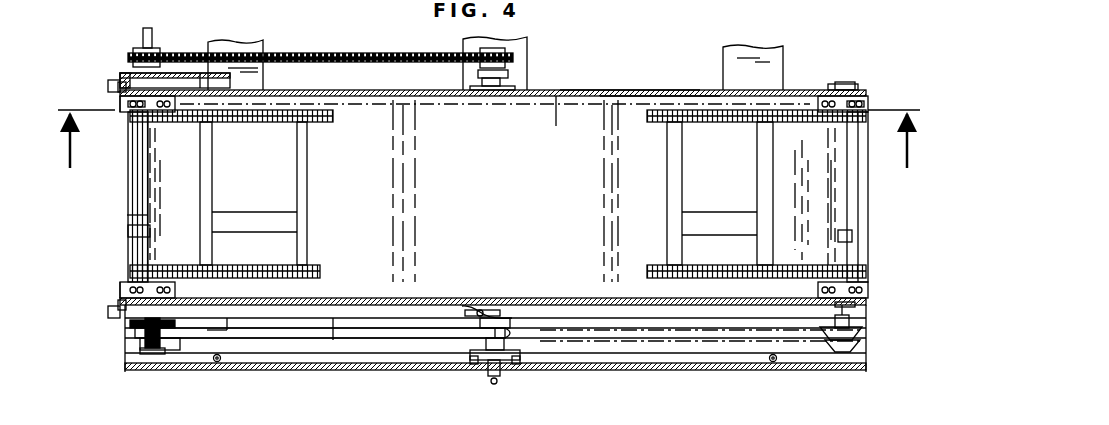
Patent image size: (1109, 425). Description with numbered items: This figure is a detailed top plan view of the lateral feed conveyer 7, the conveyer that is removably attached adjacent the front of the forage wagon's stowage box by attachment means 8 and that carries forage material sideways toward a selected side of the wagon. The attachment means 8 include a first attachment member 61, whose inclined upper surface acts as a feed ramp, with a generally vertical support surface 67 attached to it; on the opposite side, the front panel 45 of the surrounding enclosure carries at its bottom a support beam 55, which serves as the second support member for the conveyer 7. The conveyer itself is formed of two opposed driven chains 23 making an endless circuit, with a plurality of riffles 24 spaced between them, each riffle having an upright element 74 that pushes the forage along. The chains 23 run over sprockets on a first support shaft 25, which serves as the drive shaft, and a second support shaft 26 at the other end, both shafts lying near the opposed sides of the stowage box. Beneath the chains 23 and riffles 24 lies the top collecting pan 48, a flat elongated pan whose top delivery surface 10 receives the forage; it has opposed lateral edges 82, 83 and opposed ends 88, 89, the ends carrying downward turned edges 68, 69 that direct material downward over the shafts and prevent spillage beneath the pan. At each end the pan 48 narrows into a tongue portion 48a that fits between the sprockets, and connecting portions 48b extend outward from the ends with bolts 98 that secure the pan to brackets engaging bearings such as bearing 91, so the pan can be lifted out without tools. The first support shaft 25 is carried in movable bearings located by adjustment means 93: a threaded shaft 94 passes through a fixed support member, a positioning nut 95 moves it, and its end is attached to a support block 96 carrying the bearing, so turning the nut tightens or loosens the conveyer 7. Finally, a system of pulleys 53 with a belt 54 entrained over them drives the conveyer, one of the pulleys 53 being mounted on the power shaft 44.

The lateral feed conveyer 7 is at (62, 265).
The attachment means 8 is at (786, 65).
The top delivery surface 10 is at (556, 122).
The driven chains 23 is at (312, 122).
The riffles 24 is at (295, 220).
The first support shaft 25 is at (147, 322).
The second support shaft 26 is at (849, 322).
The power shaft 44 is at (493, 380).
The front panel 45 is at (573, 300).
The top collecting pan 48 is at (491, 201).
The tongue portion 48a is at (165, 195).
The connecting portions 48b is at (840, 100).
The pulleys 53 is at (135, 338).
The belt 54 is at (335, 343).
The support beam 55 is at (360, 297).
The first attachment member 61 is at (627, 91).
The vertical support surface 67 is at (654, 96).
The downward turned edge 68 is at (145, 233).
The downward turned edge 69 is at (840, 236).
The upright element 74 is at (127, 215).
The lateral edge 82 is at (543, 98).
The lateral edge 83 is at (603, 298).
The end 88 is at (156, 180).
The end 89 is at (834, 207).
The bearing 91 is at (850, 86).
The adjustment means 93 is at (107, 72).
The threaded shaft 94 is at (116, 82).
The positioning nut 95 is at (118, 90).
The support block 96 is at (180, 87).
The bolts 98 is at (822, 100).